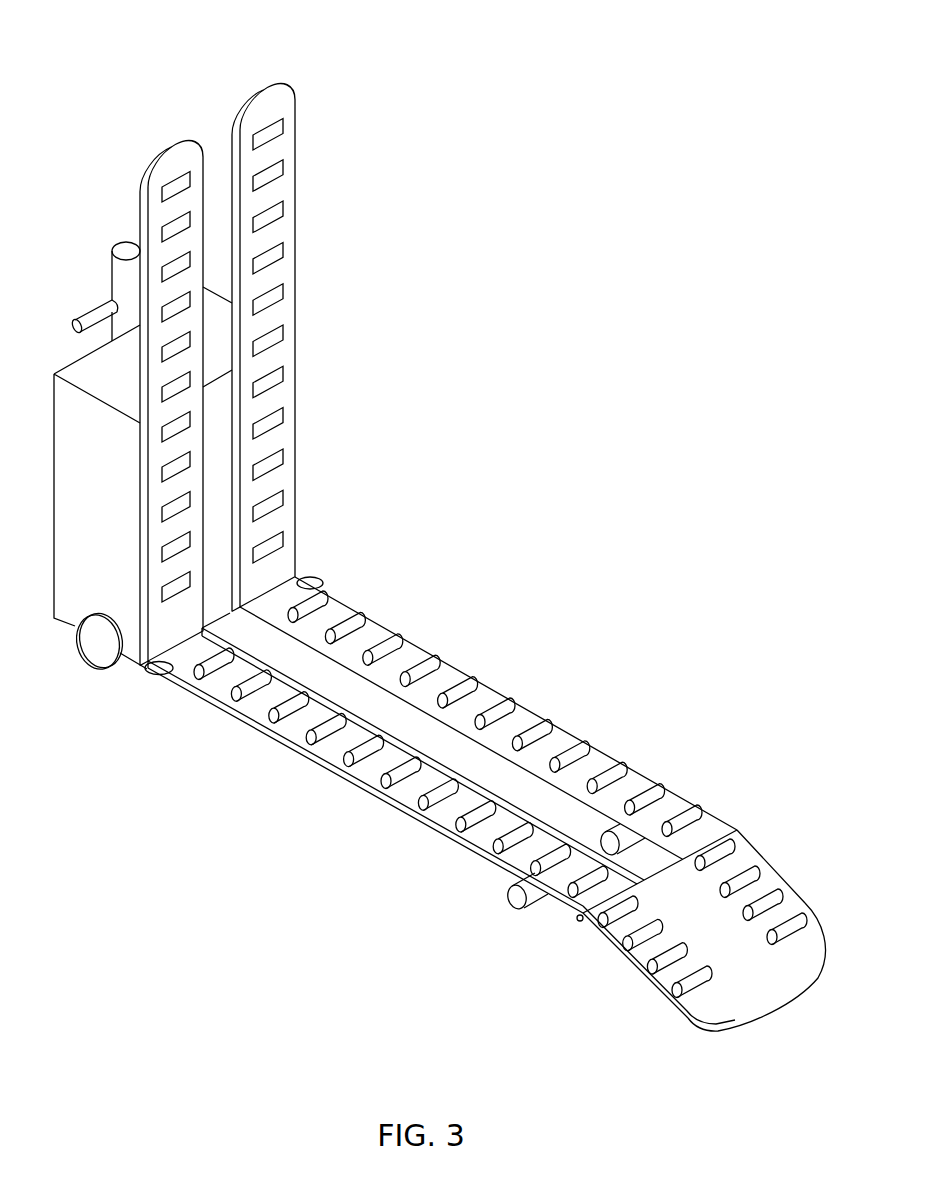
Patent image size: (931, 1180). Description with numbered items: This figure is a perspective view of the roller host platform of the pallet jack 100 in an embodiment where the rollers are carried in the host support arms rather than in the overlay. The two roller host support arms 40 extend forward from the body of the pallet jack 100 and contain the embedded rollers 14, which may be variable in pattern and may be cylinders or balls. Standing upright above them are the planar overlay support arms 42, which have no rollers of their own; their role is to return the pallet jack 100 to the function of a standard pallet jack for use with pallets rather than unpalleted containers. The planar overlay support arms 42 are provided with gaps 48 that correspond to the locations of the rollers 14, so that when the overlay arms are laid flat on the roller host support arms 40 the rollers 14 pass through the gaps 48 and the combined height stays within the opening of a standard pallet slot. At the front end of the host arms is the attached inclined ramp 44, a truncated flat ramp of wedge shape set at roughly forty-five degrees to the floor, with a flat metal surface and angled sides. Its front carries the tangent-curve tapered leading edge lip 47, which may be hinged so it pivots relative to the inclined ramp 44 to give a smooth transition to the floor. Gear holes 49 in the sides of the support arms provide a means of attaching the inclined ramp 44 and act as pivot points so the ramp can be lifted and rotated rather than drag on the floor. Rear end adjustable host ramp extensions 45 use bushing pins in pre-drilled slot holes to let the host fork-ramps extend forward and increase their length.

The pallet jack 100 is at (489, 354).
The planar overlay support arms 42 is at (262, 92).
The gaps 48 is at (283, 250).
The roller host support arms 40 is at (600, 735).
The rollers 14 is at (463, 692).
The inclined ramp 44 is at (775, 866).
The leading edge lip 47 is at (827, 963).
The rear end adjustable host ramp extensions 45 is at (155, 672).
The gear holes 49 is at (577, 919).